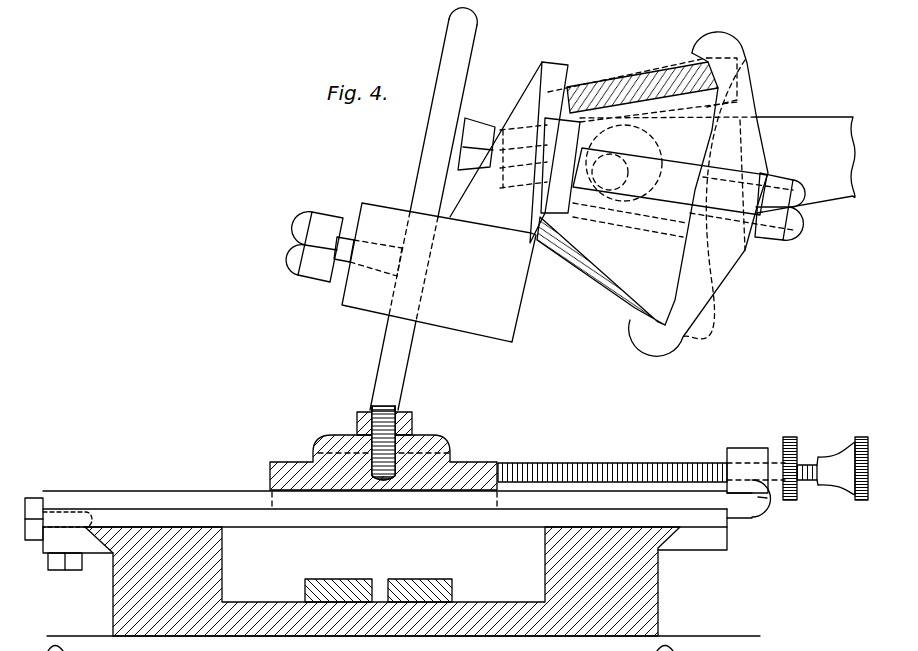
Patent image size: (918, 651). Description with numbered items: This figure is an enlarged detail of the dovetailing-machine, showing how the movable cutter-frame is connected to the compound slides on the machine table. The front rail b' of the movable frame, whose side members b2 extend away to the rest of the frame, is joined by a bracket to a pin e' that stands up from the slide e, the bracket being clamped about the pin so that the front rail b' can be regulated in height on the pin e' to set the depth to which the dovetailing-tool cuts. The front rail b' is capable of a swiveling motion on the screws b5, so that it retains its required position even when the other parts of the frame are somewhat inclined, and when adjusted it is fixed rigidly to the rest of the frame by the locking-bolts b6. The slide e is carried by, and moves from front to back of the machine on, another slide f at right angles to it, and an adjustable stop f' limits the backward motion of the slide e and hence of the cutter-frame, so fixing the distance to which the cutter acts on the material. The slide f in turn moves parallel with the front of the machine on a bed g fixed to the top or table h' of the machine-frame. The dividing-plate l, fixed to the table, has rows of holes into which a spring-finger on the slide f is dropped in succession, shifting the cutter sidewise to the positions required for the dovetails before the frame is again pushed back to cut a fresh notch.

The pin e' is at (423, 244).
The locking-bolts b6 is at (502, 145).
The front rail b' is at (627, 189).
The screws b5 is at (628, 165).
The movable frame side bars b2 is at (806, 165).
The slide e is at (383, 460).
The slide f is at (376, 529).
The adjustable stop f' is at (683, 477).
The bed g is at (382, 581).
The dividing-plate l is at (378, 581).
The top or table h' is at (403, 623).